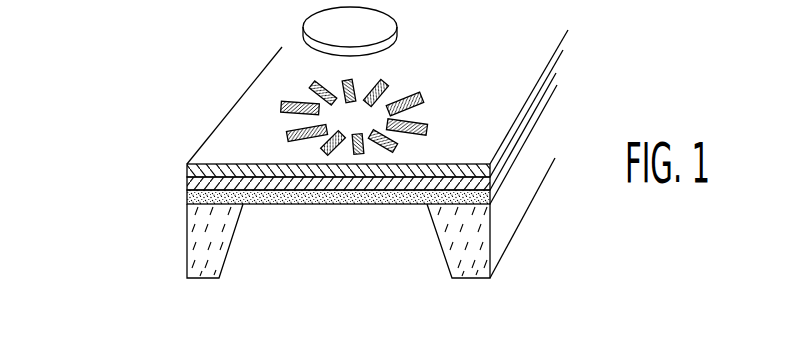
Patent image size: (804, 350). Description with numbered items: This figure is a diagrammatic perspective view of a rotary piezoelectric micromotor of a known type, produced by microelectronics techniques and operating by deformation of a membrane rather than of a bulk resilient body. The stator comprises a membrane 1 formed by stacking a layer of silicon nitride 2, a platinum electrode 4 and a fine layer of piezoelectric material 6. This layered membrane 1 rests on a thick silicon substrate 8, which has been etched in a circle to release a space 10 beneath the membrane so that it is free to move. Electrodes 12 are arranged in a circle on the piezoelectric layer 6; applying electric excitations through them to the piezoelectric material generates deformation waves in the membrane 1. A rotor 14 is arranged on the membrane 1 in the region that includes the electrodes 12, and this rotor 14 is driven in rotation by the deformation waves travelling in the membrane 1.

The membrane 1 is at (85, 117).
The layer of silicon nitride 2 is at (187, 198).
The platinum electrode 4 is at (187, 185).
The fine layer of piezoelectric material 6 is at (187, 170).
The thick silicon substrate 8 is at (203, 255).
The space 10 is at (350, 256).
The electrodes 12 is at (318, 89).
The rotor 14 is at (317, 27).